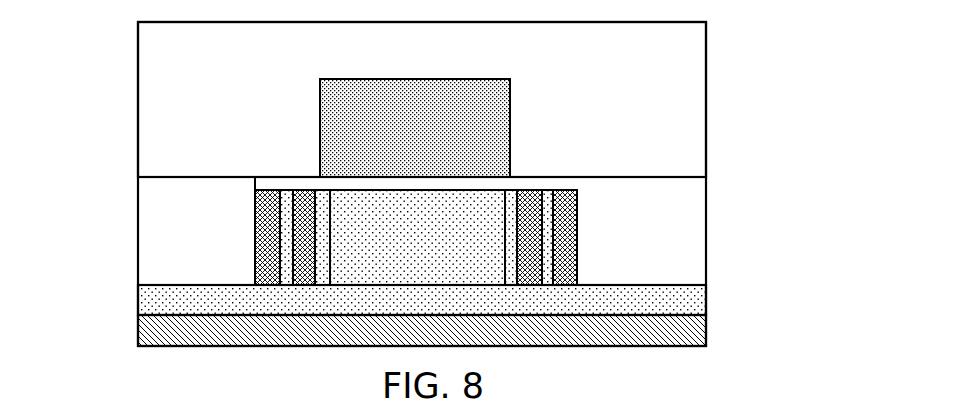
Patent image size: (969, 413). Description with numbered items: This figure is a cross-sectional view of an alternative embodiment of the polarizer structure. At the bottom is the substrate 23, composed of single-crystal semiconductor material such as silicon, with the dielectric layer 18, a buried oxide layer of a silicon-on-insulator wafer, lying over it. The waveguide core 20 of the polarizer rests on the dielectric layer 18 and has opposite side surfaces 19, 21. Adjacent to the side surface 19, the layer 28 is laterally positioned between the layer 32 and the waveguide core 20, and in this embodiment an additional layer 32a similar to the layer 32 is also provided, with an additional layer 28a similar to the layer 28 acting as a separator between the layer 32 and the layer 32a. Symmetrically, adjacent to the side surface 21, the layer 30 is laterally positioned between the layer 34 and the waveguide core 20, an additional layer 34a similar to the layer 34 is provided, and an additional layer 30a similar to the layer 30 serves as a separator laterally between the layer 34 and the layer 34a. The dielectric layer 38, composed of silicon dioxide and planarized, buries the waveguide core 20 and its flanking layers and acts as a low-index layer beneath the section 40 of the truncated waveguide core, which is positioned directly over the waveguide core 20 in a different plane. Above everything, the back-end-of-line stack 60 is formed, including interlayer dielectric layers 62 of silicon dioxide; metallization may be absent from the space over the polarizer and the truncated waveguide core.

The back-end-of-line stack 60 is at (134, 61).
The interlayer dielectric layers 62 is at (683, 113).
The section of the truncated waveguide core 40 is at (462, 131).
The dielectric layer 38 is at (155, 226).
The waveguide core 20 is at (372, 222).
The side surface 19 is at (327, 268).
The side surface 21 is at (508, 230).
The layer 28 is at (325, 253).
The additional layer 28a is at (290, 266).
The layer 32 is at (305, 207).
The additional layer 32a is at (268, 225).
The layer 30 is at (508, 267).
The additional layer 30a is at (545, 271).
The layer 34 is at (530, 248).
The additional layer 34a is at (568, 206).
The dielectric layer 18 is at (155, 303).
The substrate 23 is at (682, 333).